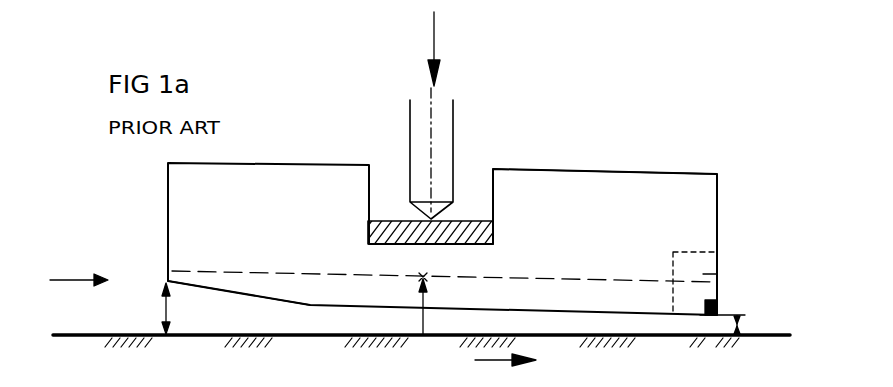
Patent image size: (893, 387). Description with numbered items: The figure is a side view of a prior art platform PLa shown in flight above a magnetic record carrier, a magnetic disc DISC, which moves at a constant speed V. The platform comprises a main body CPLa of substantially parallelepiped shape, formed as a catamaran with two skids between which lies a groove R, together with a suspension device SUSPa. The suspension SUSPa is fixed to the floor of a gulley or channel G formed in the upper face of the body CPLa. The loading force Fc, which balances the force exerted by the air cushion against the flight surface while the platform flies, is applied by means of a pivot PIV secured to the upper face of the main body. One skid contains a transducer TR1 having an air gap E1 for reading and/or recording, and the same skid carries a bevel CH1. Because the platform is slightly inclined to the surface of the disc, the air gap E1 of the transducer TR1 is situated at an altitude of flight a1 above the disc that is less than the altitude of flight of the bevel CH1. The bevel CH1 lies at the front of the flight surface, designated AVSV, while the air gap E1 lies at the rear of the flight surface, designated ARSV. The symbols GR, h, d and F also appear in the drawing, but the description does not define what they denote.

The prior art platform PLa is at (717, 215).
The pivot PIV is at (410, 122).
The loading force Fc is at (451, 49).
The suspension device SUSPa is at (368, 225).
The gulley or channel G is at (493, 190).
The main body CPLa is at (605, 192).
The groove R is at (580, 278).
The center of gravity / reference point GR is at (434, 270).
The flying height of reference point h is at (430, 306).
The transducer TR1 is at (717, 275).
The air gap E1 is at (717, 302).
The altitude of flight a1 is at (739, 326).
The magnetic disc DISC is at (320, 337).
The constant speed V is at (496, 363).
The bevel CH1 is at (240, 299).
The leading edge height d is at (156, 308).
The air flow direction F is at (79, 270).
The front of the flight surface AVSV is at (168, 276).
The rear of the flight surface ARSV is at (712, 317).